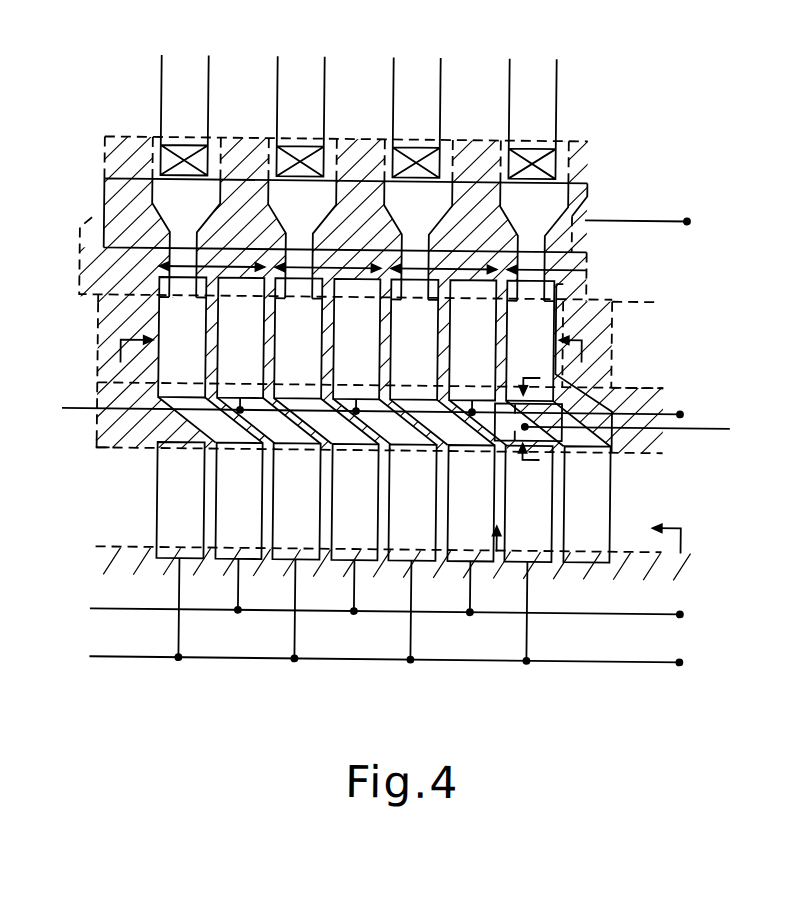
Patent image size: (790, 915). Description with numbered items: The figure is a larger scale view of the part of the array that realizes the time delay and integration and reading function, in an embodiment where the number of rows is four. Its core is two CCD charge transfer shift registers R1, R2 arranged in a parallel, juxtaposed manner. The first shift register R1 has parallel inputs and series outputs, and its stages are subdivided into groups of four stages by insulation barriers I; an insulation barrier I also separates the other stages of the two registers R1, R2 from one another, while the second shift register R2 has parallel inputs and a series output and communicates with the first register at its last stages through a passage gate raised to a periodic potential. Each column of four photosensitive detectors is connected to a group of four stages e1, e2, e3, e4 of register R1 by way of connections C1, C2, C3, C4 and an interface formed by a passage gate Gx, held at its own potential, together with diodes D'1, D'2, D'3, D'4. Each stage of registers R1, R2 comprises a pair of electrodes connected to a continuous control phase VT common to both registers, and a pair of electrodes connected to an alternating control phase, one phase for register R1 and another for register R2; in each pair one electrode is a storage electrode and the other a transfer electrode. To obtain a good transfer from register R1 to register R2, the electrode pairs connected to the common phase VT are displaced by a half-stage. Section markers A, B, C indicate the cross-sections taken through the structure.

The connection C1 is at (181, 160).
The connection C2 is at (297, 160).
The connection C3 is at (413, 160).
The connection C4 is at (529, 160).
The diode D'1 is at (196, 200).
The diode D'2 is at (312, 201).
The diode D'3 is at (428, 202).
The diode D'4 is at (544, 204).
The passage gate Gx is at (125, 178).
The insulation barrier I is at (90, 279).
The first shift register R1 is at (152, 322).
The second shift register R2 is at (156, 499).
The continuous control phase VT is at (406, 593).
The stage e1 is at (211, 258).
The stage e2 is at (327, 259).
The stage e3 is at (443, 260).
The stage e4 is at (546, 262).
The section line A- A is at (357, 360).
The section line B- B is at (529, 424).
The section line C- C is at (594, 537).